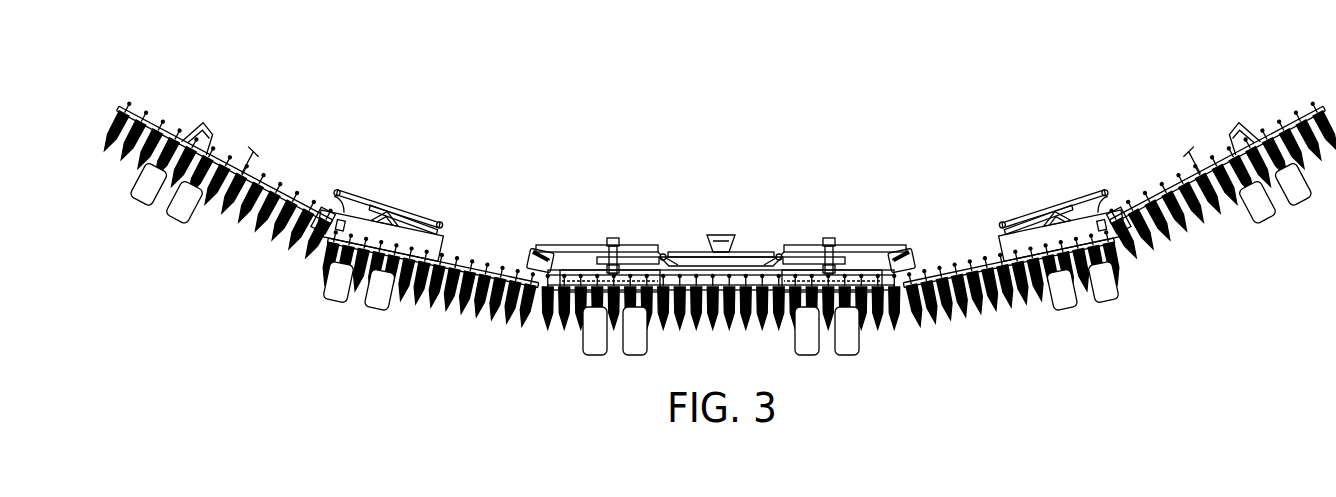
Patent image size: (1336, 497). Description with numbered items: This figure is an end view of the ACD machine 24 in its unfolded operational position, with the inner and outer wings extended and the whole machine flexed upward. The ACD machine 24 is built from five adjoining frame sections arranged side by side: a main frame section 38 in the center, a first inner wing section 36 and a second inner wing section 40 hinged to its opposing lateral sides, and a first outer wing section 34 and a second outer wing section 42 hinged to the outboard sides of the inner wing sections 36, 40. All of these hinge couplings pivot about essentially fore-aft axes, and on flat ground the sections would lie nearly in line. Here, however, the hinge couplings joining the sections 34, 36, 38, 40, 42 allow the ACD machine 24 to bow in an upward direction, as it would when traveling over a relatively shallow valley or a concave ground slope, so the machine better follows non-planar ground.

The ACD machine 24 is at (186, 56).
The first outer wing section 34 is at (322, 198).
The first inner wing section 36 is at (494, 257).
The main frame section 38 is at (722, 234).
The second inner wing section 40 is at (922, 267).
The second outer wing section 42 is at (1182, 173).